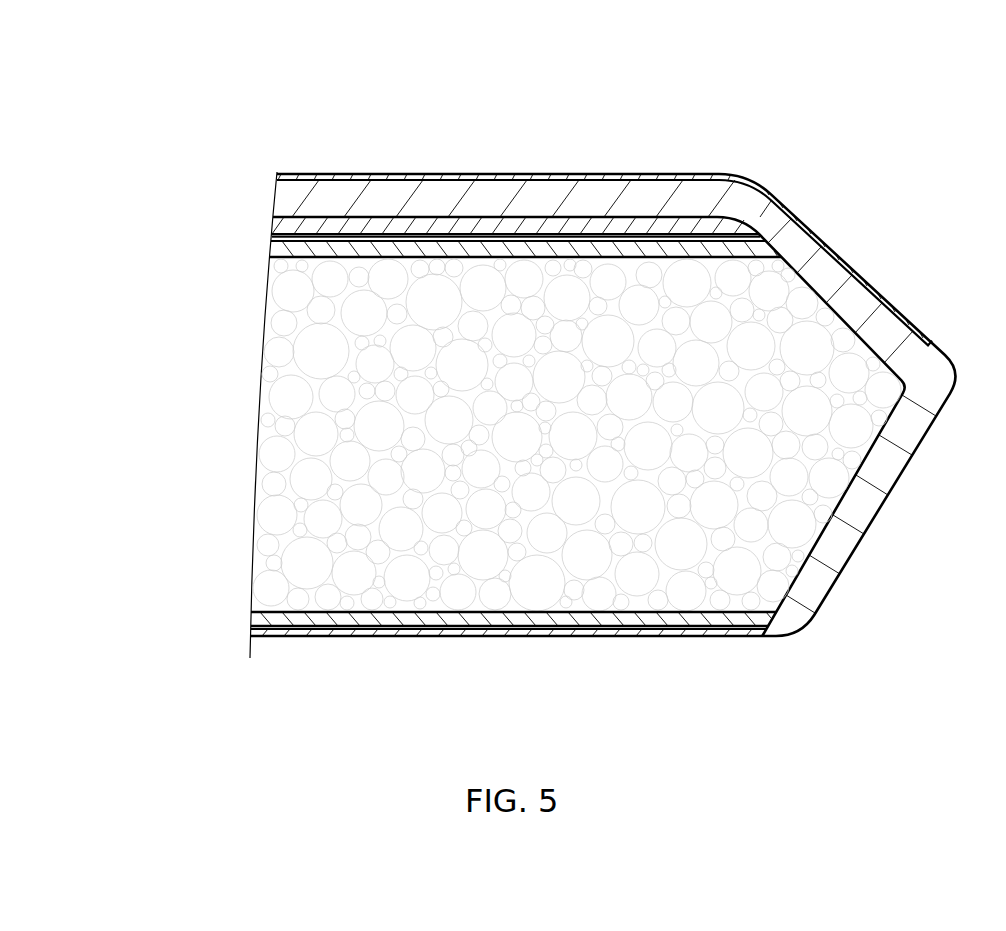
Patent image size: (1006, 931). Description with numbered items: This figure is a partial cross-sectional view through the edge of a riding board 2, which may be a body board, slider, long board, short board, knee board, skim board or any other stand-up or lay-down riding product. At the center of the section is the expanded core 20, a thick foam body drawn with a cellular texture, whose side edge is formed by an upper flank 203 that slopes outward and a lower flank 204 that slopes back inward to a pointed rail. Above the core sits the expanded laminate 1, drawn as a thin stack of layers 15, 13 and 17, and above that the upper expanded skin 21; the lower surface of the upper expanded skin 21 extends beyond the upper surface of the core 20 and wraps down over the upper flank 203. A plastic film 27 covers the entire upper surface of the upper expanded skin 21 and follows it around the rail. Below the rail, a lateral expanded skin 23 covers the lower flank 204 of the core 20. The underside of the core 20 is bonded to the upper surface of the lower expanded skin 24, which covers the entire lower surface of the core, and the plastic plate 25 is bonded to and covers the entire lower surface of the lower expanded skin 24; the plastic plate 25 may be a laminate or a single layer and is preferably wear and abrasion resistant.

The expanded laminate 1 is at (142, 152).
The riding board 2 is at (787, 132).
The adhesive layer 13 is at (265, 237).
The upper bonding layer 15 is at (295, 223).
The lower bonding layer 17 is at (267, 248).
The expanded core 20 is at (268, 372).
The upper expanded skin 21 is at (625, 195).
The lateral expanded skin 23 is at (905, 440).
The lower expanded skin 24 is at (258, 615).
The plastic plate 25 is at (257, 630).
The plastic film 27 is at (455, 178).
The upper flank 203 is at (816, 292).
The lower flank 204 is at (850, 475).